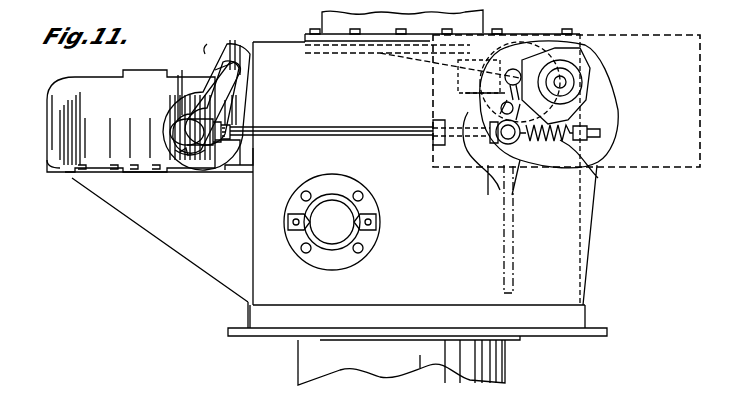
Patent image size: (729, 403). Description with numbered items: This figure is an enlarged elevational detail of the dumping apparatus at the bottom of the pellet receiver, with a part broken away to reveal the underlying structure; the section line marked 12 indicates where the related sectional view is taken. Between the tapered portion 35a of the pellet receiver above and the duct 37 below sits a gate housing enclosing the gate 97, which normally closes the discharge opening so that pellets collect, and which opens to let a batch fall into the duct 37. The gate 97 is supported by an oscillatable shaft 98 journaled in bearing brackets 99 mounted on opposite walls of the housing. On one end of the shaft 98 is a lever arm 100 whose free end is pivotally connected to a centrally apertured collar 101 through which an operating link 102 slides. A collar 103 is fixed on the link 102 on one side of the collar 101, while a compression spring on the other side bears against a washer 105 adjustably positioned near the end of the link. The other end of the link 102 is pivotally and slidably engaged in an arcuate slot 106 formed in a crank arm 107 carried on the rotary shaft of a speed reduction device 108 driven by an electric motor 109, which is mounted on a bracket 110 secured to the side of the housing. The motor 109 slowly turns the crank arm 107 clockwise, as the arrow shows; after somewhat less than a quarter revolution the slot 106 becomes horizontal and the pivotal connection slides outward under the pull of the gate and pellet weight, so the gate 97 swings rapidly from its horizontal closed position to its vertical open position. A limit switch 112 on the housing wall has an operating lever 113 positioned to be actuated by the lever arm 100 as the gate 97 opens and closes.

The section line 12- 12 is at (283, 30).
The gate 97 is at (341, 57).
The bracket 110 is at (124, 208).
The electric motor 109 is at (60, 150).
The crank arm 107 is at (172, 74).
The arcuate slot 106 is at (210, 52).
The speed reduction device 108 is at (216, 160).
The operating link 102 is at (386, 135).
The bearing brackets 99 is at (576, 108).
The oscillatable shaft 98 is at (567, 85).
The limit switch 112 is at (505, 80).
The operating lever 113 is at (501, 108).
The collar 101 is at (532, 150).
The collar 103 is at (496, 168).
The lever arm 100 is at (600, 135).
The washer 105 is at (598, 170).
The tapered portion 35a is at (484, 33).
The duct 37 is at (487, 363).